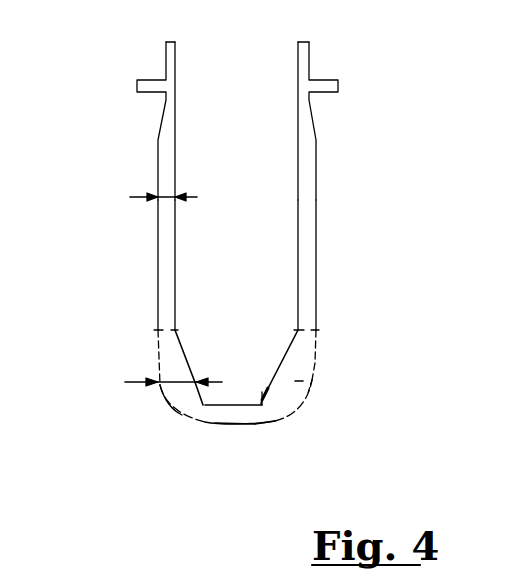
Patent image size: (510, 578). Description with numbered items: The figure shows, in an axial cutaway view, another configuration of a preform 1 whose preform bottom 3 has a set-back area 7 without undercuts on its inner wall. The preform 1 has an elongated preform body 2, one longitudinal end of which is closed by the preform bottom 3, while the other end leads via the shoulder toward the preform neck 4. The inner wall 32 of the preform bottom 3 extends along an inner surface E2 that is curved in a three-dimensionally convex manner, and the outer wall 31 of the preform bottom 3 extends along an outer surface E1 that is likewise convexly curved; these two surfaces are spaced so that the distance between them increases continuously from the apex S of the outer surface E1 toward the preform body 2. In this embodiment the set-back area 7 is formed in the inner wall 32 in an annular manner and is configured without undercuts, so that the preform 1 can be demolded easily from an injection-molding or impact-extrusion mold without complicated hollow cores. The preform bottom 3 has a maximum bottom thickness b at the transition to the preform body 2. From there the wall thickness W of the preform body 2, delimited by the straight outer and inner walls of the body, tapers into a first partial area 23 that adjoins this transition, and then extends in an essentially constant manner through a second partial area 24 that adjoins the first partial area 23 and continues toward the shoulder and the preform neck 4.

The preform 1 is at (88, 208).
The preform neck 4 is at (166, 56).
The second partial area 24 is at (316, 177).
The preform body 2 is at (317, 230).
The wall thickness W is at (143, 197).
The set-back area 7 is at (194, 377).
The inner wall 32 is at (232, 403).
The outer surface E1 is at (245, 396).
The inner surface E2 is at (180, 412).
The preform bottom 3 is at (295, 410).
The apex S is at (238, 423).
The outer wall 31 is at (268, 422).
The first partial area 23 is at (308, 370).
The maximum bottom thickness b is at (125, 387).